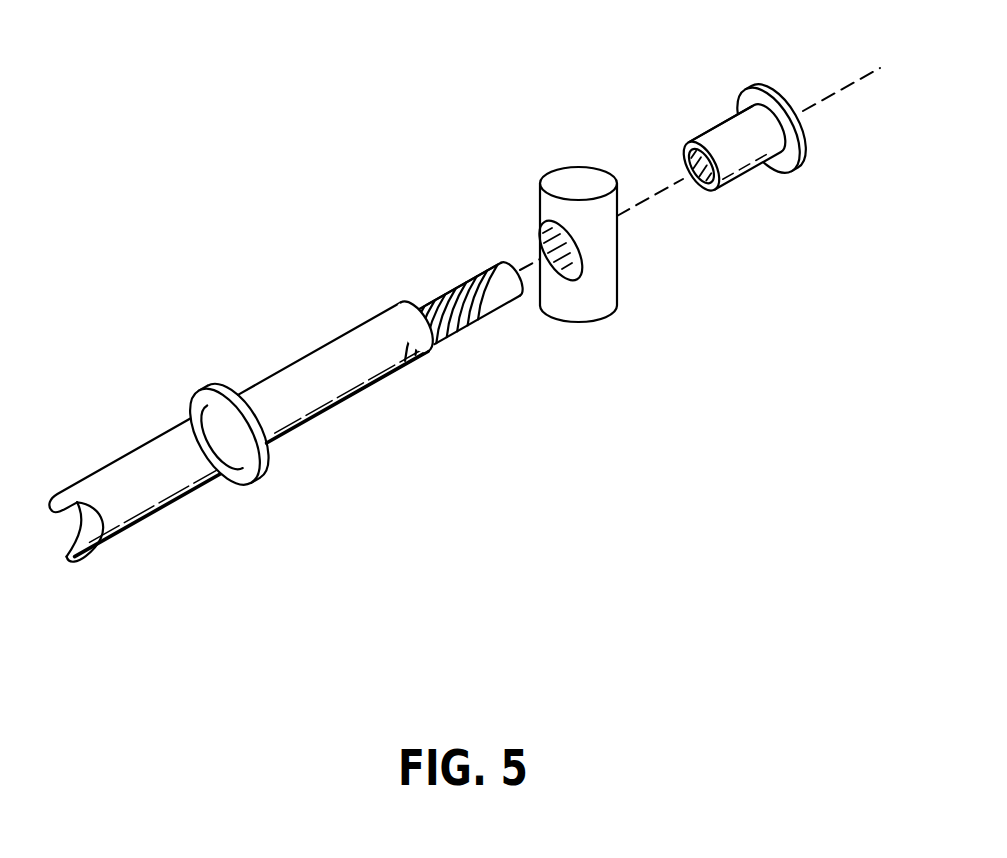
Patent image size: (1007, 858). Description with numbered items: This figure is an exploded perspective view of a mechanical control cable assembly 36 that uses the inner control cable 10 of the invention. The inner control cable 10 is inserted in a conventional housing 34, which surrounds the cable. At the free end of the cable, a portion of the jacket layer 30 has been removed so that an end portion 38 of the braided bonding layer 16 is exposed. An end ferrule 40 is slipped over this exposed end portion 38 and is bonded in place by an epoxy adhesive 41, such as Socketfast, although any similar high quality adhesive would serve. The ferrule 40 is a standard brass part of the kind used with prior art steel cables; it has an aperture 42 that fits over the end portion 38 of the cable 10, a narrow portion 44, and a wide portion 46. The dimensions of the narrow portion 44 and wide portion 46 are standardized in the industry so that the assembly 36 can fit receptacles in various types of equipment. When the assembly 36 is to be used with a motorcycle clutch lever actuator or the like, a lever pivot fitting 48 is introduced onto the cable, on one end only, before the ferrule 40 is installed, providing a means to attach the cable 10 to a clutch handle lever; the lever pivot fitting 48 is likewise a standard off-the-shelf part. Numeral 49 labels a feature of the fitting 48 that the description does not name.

The inner control cable 10 is at (422, 397).
The braided bonding layer 16 is at (462, 284).
The jacket layer 30 is at (347, 390).
The conventional housing 34 is at (132, 487).
The mechanical control cable assembly 36 is at (162, 230).
The end portion 38 is at (500, 313).
The end ferrule 40 is at (762, 152).
The epoxy adhesive 41 is at (460, 326).
The aperture 42 is at (704, 190).
The narrow portion 44 is at (720, 123).
The wide portion 46 is at (757, 92).
The lever pivot fitting 48 is at (618, 290).
The aperture 49 is at (541, 242).